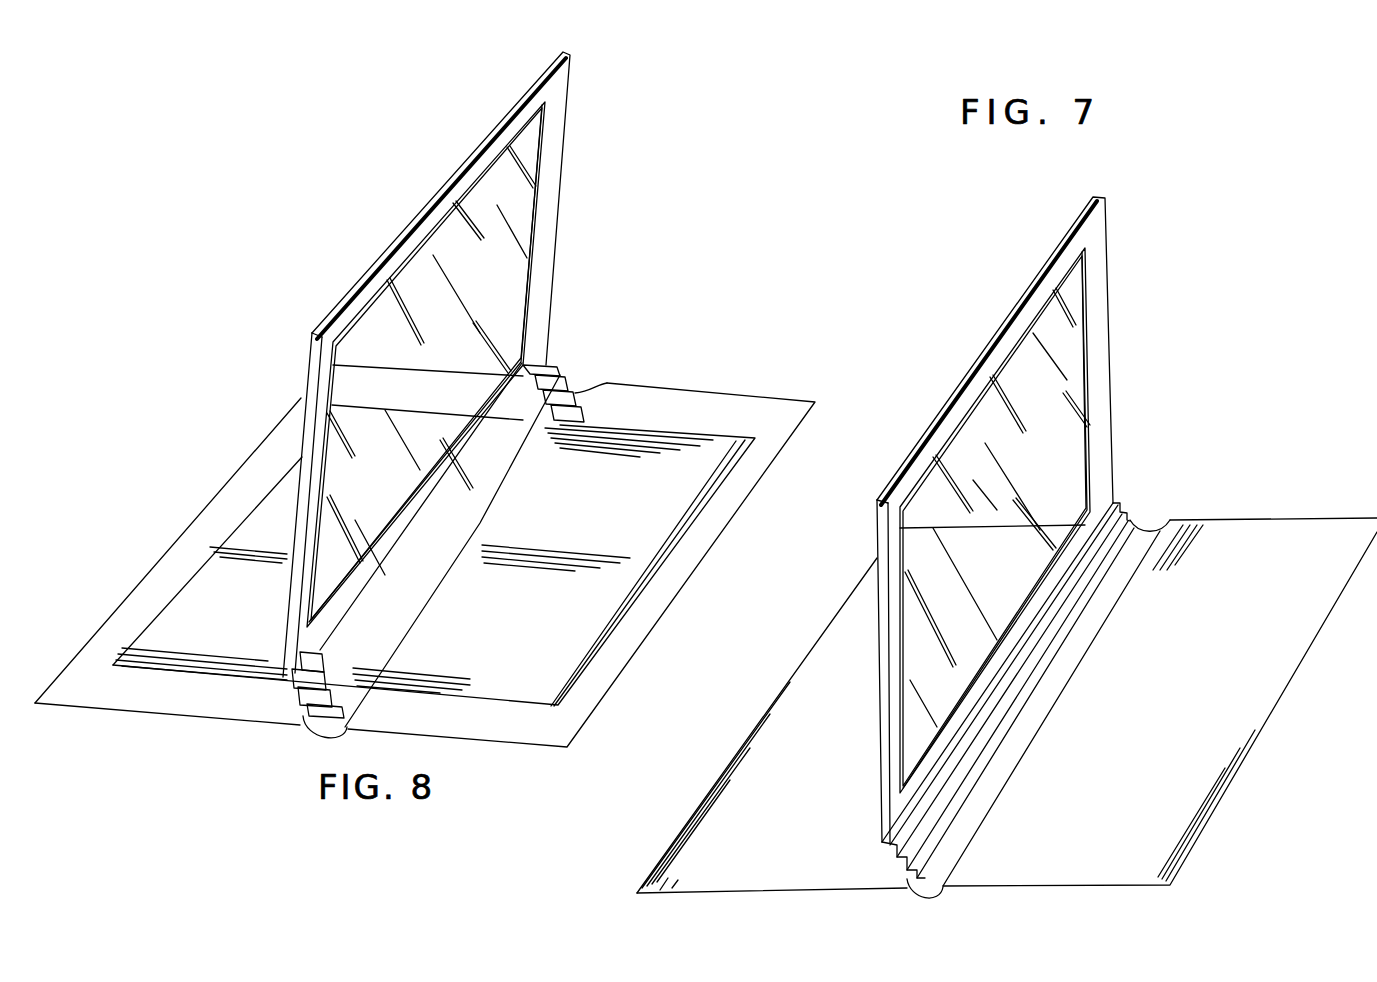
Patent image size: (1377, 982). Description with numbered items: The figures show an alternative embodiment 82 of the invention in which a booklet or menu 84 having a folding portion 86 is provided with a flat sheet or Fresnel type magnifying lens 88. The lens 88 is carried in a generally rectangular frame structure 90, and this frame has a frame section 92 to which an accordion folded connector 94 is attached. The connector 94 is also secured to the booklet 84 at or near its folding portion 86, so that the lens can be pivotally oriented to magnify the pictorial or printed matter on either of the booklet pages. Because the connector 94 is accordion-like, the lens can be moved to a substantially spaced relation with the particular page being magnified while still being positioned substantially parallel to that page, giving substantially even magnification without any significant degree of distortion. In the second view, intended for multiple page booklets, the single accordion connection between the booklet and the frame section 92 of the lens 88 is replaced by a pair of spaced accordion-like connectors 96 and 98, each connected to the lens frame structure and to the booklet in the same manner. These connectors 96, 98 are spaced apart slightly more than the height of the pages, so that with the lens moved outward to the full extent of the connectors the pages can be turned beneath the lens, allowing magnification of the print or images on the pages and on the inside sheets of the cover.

In FIG. 8, the alternative embodiment 82 is at (672, 223).
In FIG. 7, the alternative embodiment 82 is at (1198, 374).
In FIG. 8, the booklet or menu 84 is at (660, 400).
In FIG. 7, the booklet or menu 84 is at (1250, 533).
In FIG. 8, the folding portion 86 is at (307, 725).
In FIG. 7, the folding portion 86 is at (943, 868).
In FIG. 8, the flat sheet or Fresnel type magnifying lens 88 is at (525, 183).
In FIG. 7, the flat sheet or Fresnel type magnifying lens 88 is at (1067, 327).
In FIG. 8, the frame structure 90 is at (547, 217).
In FIG. 7, the frame structure 90 is at (1097, 367).
In FIG. 8, the frame section 92 is at (422, 502).
In FIG. 7, the accordion folded connector 94 is at (1130, 520).
In FIG. 8, the accordion-like connector 96 is at (567, 363).
In FIG. 8, the accordion-like connector 98 is at (335, 672).